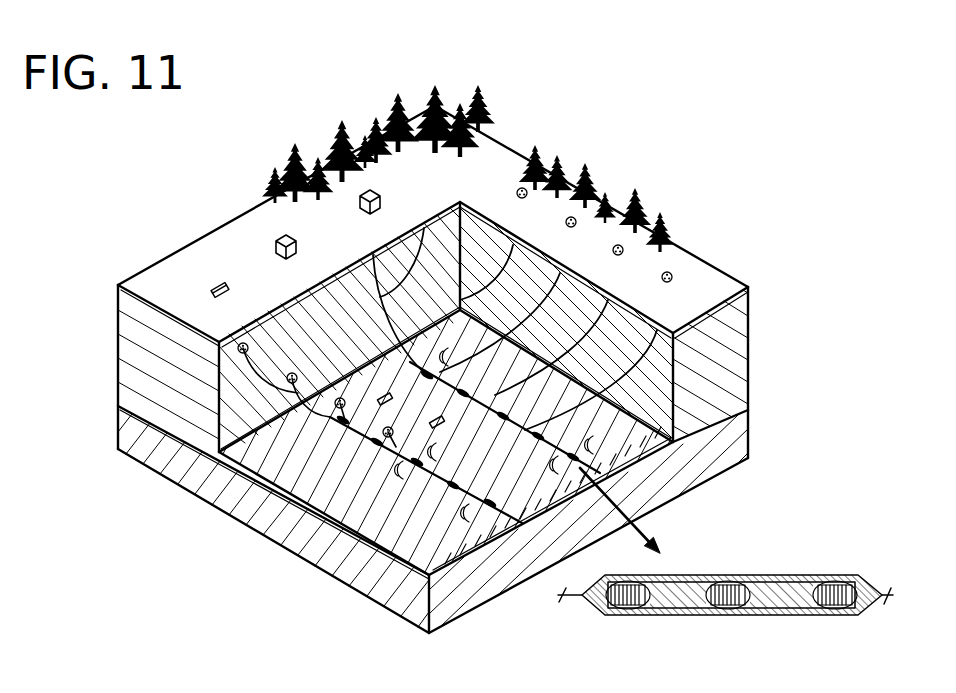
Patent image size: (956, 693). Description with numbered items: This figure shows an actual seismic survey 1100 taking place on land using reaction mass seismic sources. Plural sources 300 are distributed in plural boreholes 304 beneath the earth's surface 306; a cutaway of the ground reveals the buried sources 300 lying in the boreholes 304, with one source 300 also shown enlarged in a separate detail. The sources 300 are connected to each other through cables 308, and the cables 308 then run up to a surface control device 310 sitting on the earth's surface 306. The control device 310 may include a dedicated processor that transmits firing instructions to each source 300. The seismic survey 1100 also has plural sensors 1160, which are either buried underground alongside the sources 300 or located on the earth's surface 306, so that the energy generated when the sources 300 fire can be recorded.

The seismic survey 1100 is at (580, 61).
The source 300 is at (452, 360).
The borehole 304 is at (360, 330).
The earth's surface 306 is at (668, 276).
The cable 308 is at (424, 228).
The surface control device 310 is at (358, 205).
The sensor 1160 is at (213, 282).